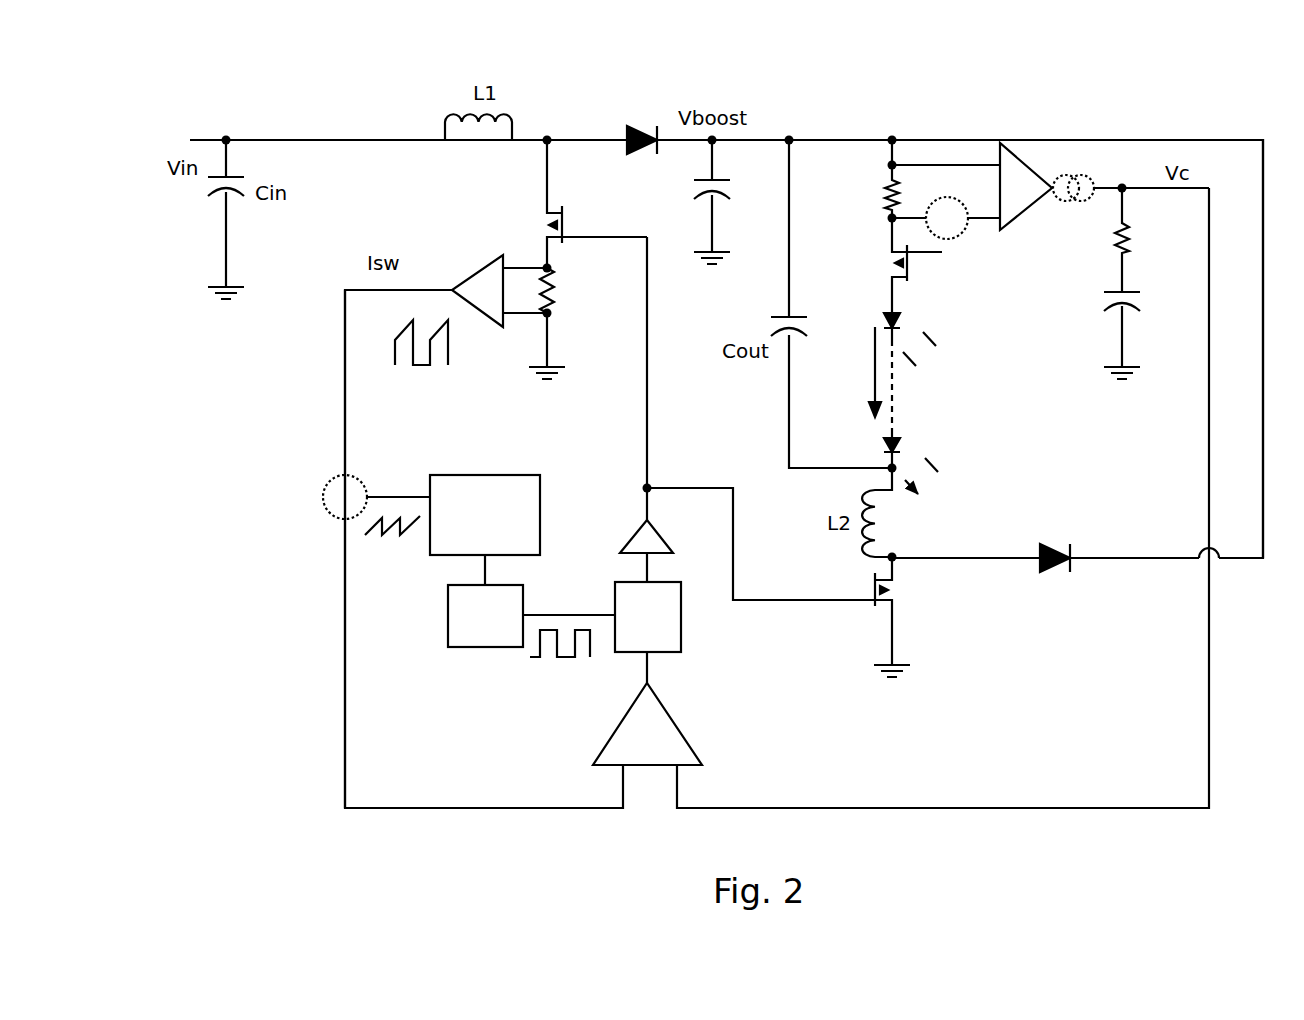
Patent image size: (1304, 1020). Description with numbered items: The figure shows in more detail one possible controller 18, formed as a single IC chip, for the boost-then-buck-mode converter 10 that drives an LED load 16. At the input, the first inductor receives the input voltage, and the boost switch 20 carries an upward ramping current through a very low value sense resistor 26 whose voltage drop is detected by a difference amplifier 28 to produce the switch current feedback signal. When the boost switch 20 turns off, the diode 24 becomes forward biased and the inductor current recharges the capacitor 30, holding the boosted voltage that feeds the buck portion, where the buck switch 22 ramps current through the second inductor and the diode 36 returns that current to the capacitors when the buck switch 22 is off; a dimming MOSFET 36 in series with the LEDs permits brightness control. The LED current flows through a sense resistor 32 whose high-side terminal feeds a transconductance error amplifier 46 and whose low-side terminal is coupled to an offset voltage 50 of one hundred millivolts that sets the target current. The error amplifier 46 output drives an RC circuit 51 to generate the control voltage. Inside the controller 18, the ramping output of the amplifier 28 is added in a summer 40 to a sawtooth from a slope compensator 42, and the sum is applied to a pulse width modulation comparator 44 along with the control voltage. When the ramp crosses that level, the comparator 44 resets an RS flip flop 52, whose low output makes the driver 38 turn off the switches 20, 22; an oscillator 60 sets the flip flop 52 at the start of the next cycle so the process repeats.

The boost-then-buck-mode converter 10 is at (1084, 76).
The load 16 is at (956, 398).
The controller 18 is at (285, 436).
The boost switch 20 is at (527, 215).
The buck switch 22 is at (910, 593).
The diode 24 is at (644, 124).
The sense resistor 26 is at (558, 299).
The difference amplifier 28 is at (476, 272).
The capacitor 30 is at (678, 183).
The sense resistor 32 is at (880, 188).
The PWM MOSFET / diode 36 is at (920, 276).
The driver 38 is at (627, 540).
The summer 40 is at (322, 505).
The slope compensator 42 is at (485, 475).
The pulse width modulation comparator 44 is at (625, 720).
The transconductance error amplifier 46 is at (1040, 178).
The offset voltage 50 is at (965, 226).
The RC circuit 51 is at (1100, 267).
The RS flip flop 52 is at (683, 598).
The oscillator 60 is at (485, 652).